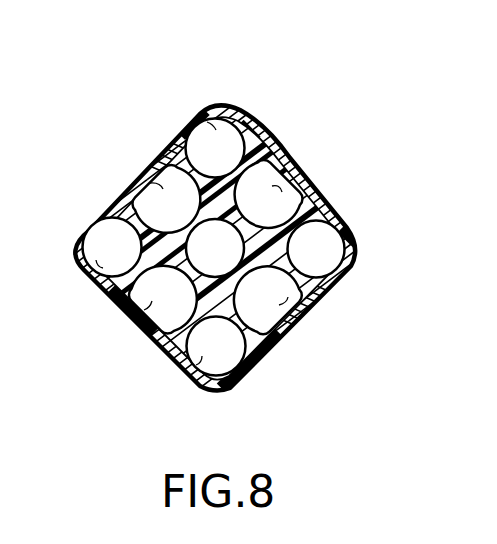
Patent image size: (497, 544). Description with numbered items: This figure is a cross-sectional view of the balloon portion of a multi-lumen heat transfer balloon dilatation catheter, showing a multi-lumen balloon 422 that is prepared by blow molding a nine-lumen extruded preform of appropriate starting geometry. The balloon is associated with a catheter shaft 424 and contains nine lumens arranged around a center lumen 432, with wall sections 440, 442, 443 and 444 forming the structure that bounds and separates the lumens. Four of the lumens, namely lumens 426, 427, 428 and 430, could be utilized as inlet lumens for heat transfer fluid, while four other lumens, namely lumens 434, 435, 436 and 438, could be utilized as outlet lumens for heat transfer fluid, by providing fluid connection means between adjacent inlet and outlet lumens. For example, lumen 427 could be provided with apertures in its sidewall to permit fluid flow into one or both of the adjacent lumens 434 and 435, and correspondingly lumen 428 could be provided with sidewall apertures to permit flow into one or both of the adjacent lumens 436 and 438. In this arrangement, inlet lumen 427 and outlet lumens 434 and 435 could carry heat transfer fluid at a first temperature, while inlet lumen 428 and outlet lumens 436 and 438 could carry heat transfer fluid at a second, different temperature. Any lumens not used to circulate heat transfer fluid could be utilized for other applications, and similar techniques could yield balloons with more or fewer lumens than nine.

The multi-lumen balloon 422 is at (271, 131).
The catheter shaft 424 is at (230, 263).
The lumen 426 is at (215, 124).
The lumen 427 is at (100, 263).
The lumen 428 is at (347, 256).
The lumen 430 is at (195, 362).
The center lumen 432 is at (351, 251).
The lumen 434 is at (124, 182).
The lumen 435 is at (130, 321).
The lumen 436 is at (284, 299).
The lumen 438 is at (293, 174).
The wall section 440 is at (138, 158).
The wall section 442 is at (283, 333).
The wall section 443 is at (112, 309).
The wall section 444 is at (291, 163).